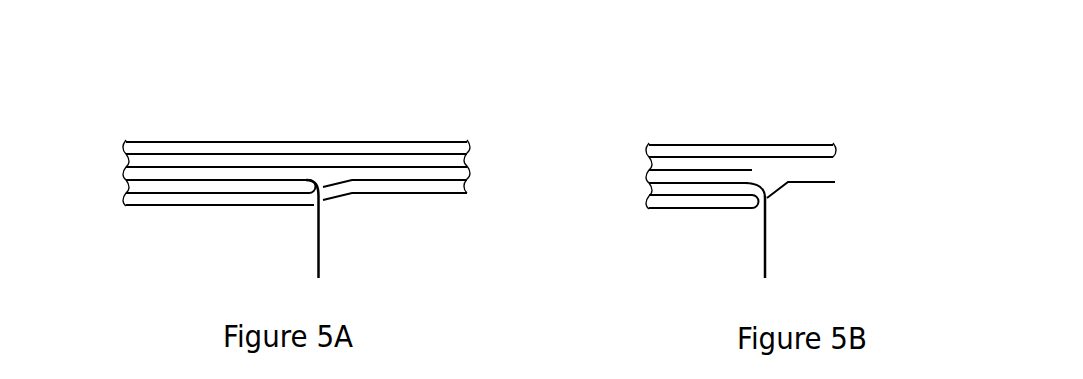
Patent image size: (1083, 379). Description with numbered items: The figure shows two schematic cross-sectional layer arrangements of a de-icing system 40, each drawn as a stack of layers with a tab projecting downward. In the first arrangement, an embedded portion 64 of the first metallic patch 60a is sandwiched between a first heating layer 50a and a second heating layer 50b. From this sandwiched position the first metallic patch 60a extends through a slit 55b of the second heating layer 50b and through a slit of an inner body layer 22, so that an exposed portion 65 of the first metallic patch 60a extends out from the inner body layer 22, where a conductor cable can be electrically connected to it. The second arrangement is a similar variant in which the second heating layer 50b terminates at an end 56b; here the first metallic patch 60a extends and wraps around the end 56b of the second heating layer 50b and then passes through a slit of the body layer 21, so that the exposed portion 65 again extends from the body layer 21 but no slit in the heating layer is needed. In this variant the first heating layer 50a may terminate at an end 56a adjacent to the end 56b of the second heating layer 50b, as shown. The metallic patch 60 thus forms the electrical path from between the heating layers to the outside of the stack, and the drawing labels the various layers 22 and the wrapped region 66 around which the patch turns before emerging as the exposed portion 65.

In FIG. 5A, the body layer 21 is at (174, 135).
In FIG. 5A, the inner body layer 22 is at (216, 153).
In FIG. 5B, the inner body layer 22 is at (812, 152).
In FIG. 5A, the de-icing system 40 is at (108, 181).
In FIG. 5B, the de-icing system 40 is at (624, 185).
In FIG. 5A, the first heating layer 50a is at (465, 162).
In FIG. 5B, the first heating layer 50a is at (666, 172).
In FIG. 5A, the second heating layer 50b is at (465, 188).
In FIG. 5B, the second heating layer 50b is at (655, 209).
In FIG. 5A, the slit of the second heating layer 55b is at (320, 183).
In FIG. 5B, the end of the first heating layer 56a is at (748, 176).
In FIG. 5B, the end of the second heating layer 56b is at (743, 209).
In FIG. 5B, the metallic patch 60 is at (677, 185).
In FIG. 5A, the first metallic patch 60a is at (150, 183).
In FIG. 5A, the embedded portion 64 is at (250, 183).
In FIG. 5B, the embedded portion 64 is at (720, 188).
In FIG. 5A, the exposed portion 65 is at (322, 250).
In FIG. 5B, the exposed portion 65 is at (768, 247).
In FIG. 5B, the fold line 66 is at (767, 203).